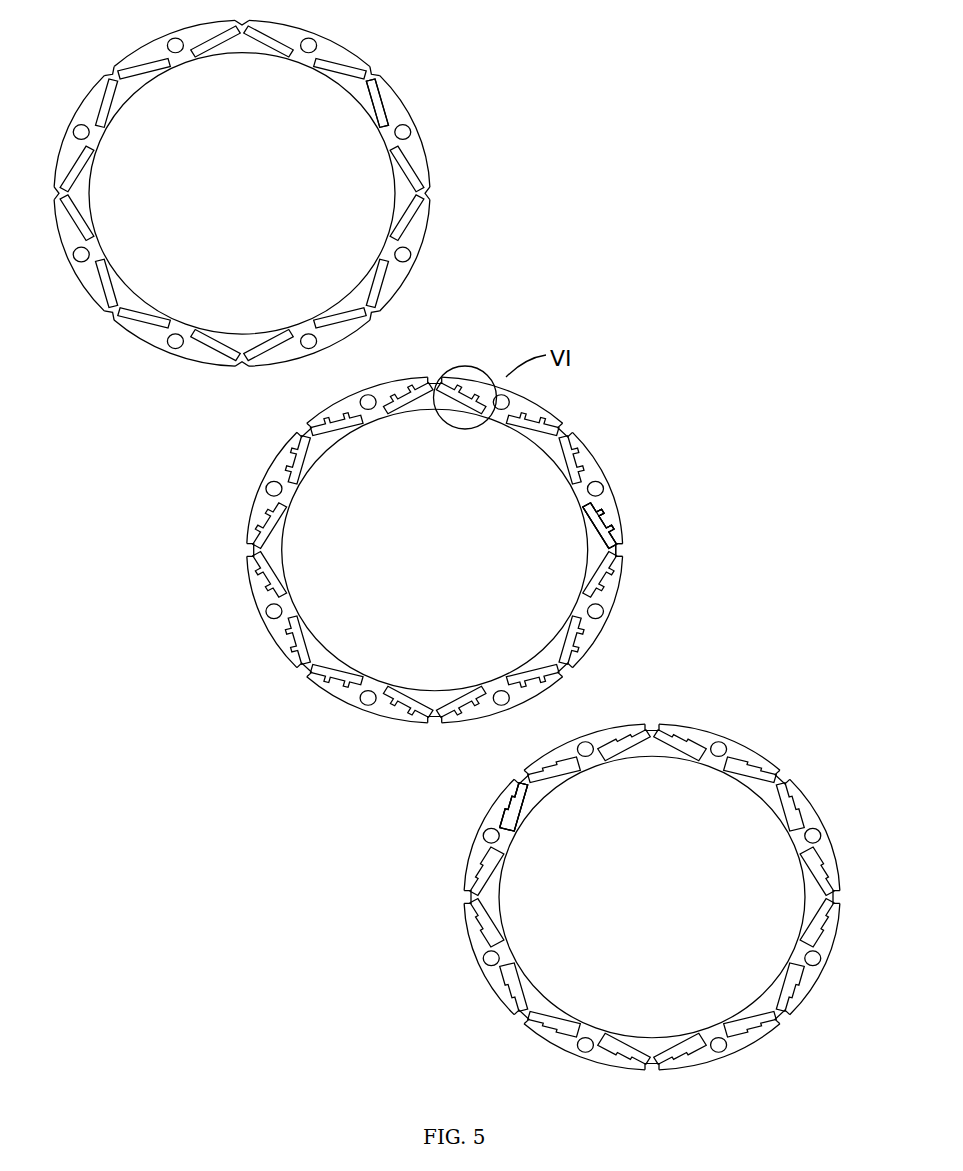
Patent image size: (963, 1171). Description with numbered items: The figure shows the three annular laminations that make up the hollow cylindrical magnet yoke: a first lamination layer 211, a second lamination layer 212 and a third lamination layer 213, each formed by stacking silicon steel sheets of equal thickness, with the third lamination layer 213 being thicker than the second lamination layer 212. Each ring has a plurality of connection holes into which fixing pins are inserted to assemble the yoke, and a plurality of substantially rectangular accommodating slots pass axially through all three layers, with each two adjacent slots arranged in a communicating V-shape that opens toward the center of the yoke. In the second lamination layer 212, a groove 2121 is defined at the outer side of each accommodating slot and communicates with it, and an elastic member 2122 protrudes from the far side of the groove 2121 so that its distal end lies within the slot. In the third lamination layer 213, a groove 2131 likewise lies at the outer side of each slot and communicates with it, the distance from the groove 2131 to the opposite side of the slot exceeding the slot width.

The first lamination layer 211 is at (404, 59).
The second lamination layer 212 is at (660, 441).
The third lamination layer 213 is at (755, 715).
The groove 2121 is at (615, 502).
The elastic member 2122 is at (607, 520).
The groove 2131 is at (510, 803).